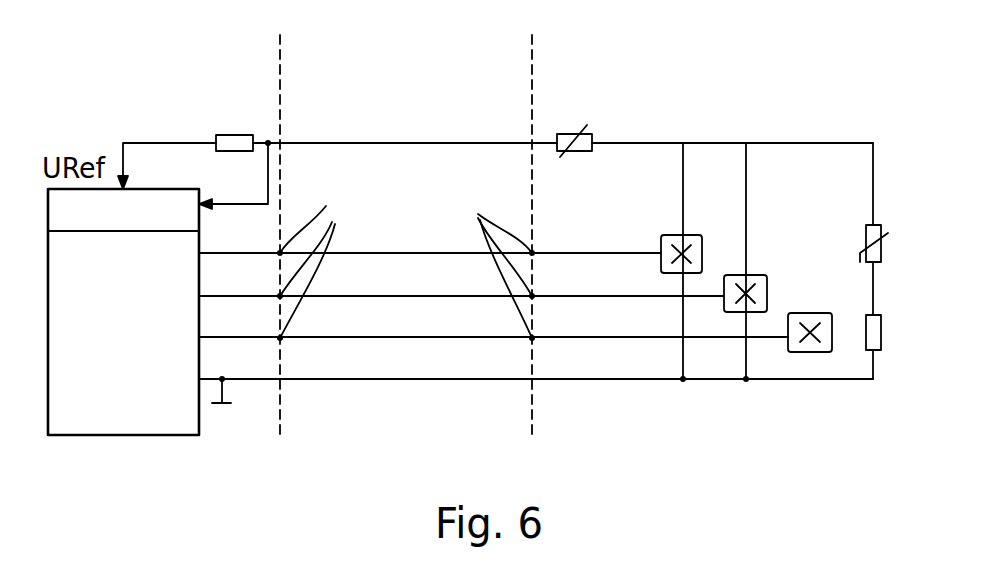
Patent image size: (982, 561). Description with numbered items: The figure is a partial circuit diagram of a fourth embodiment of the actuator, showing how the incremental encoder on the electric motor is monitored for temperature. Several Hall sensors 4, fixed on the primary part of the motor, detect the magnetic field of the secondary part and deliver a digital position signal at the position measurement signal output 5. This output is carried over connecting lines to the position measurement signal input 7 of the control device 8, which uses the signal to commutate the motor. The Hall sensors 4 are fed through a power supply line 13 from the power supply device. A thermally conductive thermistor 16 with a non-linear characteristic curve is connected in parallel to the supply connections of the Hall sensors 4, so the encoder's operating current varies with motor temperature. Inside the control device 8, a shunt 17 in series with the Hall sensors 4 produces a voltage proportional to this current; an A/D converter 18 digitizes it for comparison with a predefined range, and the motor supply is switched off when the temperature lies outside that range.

The Hall sensors 4 is at (733, 283).
The position measurement signal output 5 is at (503, 263).
The position measurement signal input 7 is at (312, 263).
The control device 8 is at (118, 327).
The power supply line 13 is at (457, 142).
The thermistor 16 is at (882, 253).
The shunt 17 is at (230, 134).
The A/D converter 18 is at (112, 221).